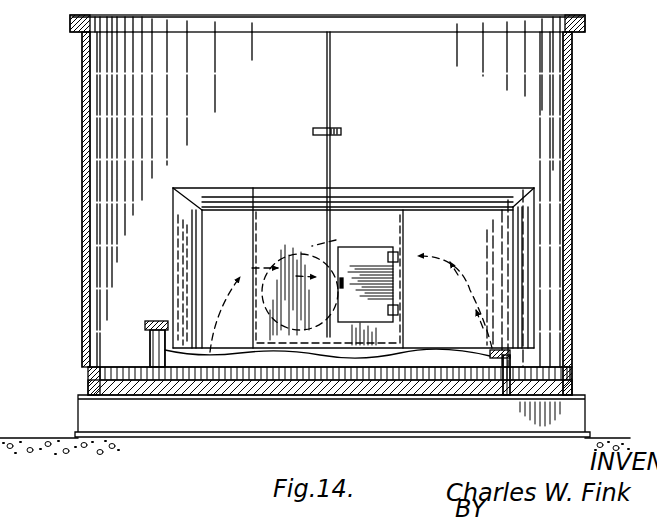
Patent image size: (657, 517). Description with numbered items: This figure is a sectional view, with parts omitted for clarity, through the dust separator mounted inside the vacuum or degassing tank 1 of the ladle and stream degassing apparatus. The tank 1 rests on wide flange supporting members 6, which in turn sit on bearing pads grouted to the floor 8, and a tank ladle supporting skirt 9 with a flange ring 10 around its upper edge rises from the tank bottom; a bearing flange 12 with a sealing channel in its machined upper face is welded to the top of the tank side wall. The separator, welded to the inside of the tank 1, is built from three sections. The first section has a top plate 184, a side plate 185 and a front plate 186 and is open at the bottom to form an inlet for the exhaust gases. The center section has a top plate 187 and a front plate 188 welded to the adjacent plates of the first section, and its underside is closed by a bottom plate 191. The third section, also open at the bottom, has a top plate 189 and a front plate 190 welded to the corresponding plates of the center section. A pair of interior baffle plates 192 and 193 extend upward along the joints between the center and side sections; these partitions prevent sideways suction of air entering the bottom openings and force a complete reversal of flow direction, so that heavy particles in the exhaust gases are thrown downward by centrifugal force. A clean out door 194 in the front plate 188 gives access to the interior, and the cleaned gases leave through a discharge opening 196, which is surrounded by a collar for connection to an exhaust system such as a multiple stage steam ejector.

The vacuum or degassing tank 1 is at (580, 149).
The supporting members 6 is at (578, 411).
The floor 8 is at (40, 440).
The tank ladle supporting skirt 9 is at (148, 346).
The flange ring 10 is at (150, 321).
The bearing flange 12 is at (575, 33).
The top plate 184 is at (219, 195).
The side plate 185 is at (178, 240).
The front plate 186 is at (521, 247).
The top plate 187 is at (310, 158).
The front plate 188 is at (270, 222).
The top plate 189 is at (427, 193).
The front plate 190 is at (468, 228).
The bottom plate 191 is at (383, 344).
The interior baffle plate 192 is at (171, 292).
The interior baffle plate 193 is at (404, 302).
The clean out door 194 is at (380, 254).
The discharge opening 196 is at (330, 237).